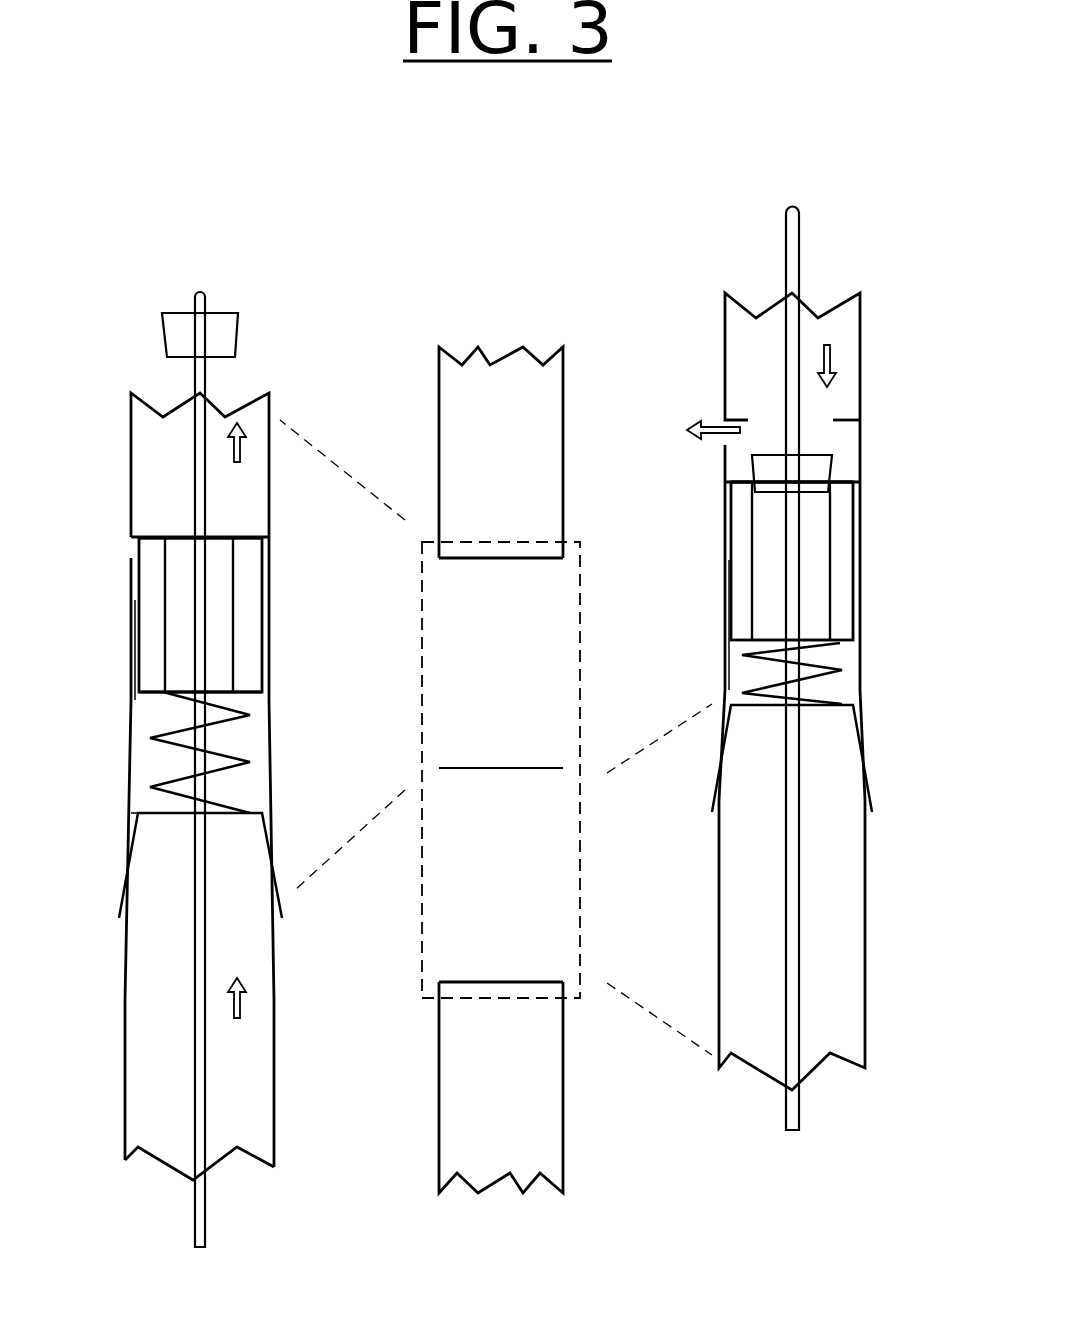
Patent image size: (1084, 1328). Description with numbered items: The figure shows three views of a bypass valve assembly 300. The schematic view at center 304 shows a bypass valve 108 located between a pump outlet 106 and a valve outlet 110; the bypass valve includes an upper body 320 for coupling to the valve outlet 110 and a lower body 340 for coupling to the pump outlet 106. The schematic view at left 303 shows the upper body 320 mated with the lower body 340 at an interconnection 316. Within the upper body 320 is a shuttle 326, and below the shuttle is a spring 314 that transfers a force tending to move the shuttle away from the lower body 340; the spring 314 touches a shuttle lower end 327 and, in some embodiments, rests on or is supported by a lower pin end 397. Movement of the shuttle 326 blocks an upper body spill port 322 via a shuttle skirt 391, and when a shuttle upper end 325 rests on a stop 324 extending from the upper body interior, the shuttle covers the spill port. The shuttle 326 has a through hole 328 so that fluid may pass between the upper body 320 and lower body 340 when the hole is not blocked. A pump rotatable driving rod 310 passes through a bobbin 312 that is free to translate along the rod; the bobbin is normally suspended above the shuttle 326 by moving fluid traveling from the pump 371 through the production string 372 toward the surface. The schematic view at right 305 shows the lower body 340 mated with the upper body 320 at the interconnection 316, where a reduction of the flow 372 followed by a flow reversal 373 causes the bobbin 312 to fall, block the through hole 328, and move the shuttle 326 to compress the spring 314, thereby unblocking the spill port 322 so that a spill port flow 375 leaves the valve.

The bypass valve assembly 300 is at (789, 125).
The schematic view at left 303 is at (266, 1213).
The schematic view at center 304 is at (567, 1213).
The schematic view at right 305 is at (846, 1209).
The pump rotatable driving rod 310 is at (207, 296).
The bobbin 312 is at (240, 344).
The spring 314 is at (241, 773).
The interconnection 316 is at (280, 863).
The upper body 320 is at (117, 416).
The upper body spill port 322 is at (125, 548).
The stop 324 is at (147, 537).
The shuttle upper end 325 is at (240, 537).
The shuttle 326 is at (250, 641).
The shuttle lower end 327 is at (132, 702).
The through hole 328 is at (218, 612).
The lower body 340 is at (118, 1105).
The pump 371 is at (241, 1012).
The production string flow 372 is at (241, 437).
The flow reversal 373 is at (831, 365).
The spill port flow 375 is at (701, 419).
The shuttle skirt 391 is at (133, 613).
The lower pin end 397 is at (150, 818).
The pump outlet 106 is at (501, 1087).
The bypass valve 108 is at (582, 592).
The valve outlet 110 is at (501, 452).